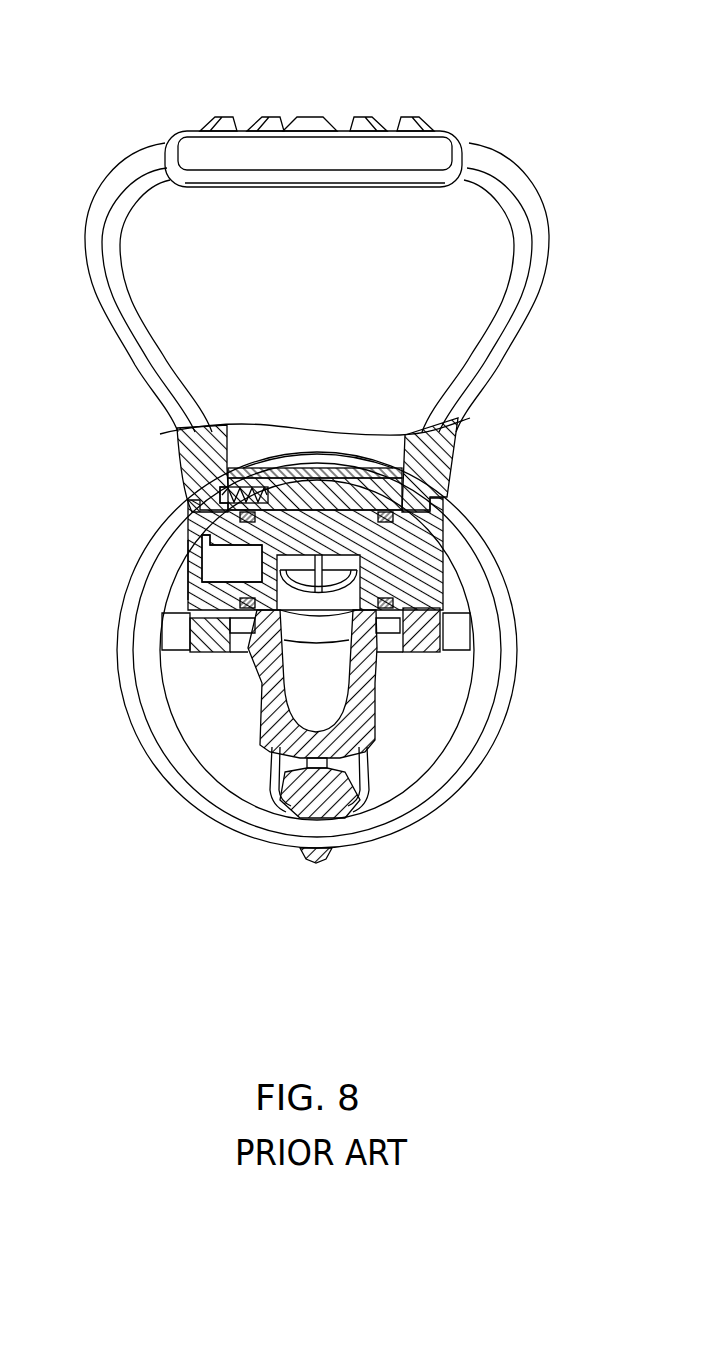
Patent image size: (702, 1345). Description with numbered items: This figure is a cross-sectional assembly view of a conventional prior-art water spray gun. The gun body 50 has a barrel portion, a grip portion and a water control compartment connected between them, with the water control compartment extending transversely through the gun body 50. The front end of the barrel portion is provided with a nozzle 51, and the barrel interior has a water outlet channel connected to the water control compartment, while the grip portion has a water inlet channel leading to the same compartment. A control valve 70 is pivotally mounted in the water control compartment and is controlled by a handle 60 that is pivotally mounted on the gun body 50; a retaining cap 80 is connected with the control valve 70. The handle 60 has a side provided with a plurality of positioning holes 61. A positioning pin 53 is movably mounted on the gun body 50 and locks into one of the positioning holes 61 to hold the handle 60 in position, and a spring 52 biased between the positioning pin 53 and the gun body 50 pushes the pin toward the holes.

The gun body 50 is at (372, 788).
The nozzle 51 is at (172, 778).
The spring 52 is at (250, 467).
The positioning pin 53 is at (215, 427).
The handle 60 is at (393, 108).
The positioning holes 61 is at (188, 500).
The control valve 70 is at (446, 557).
The retaining cap 80 is at (190, 567).